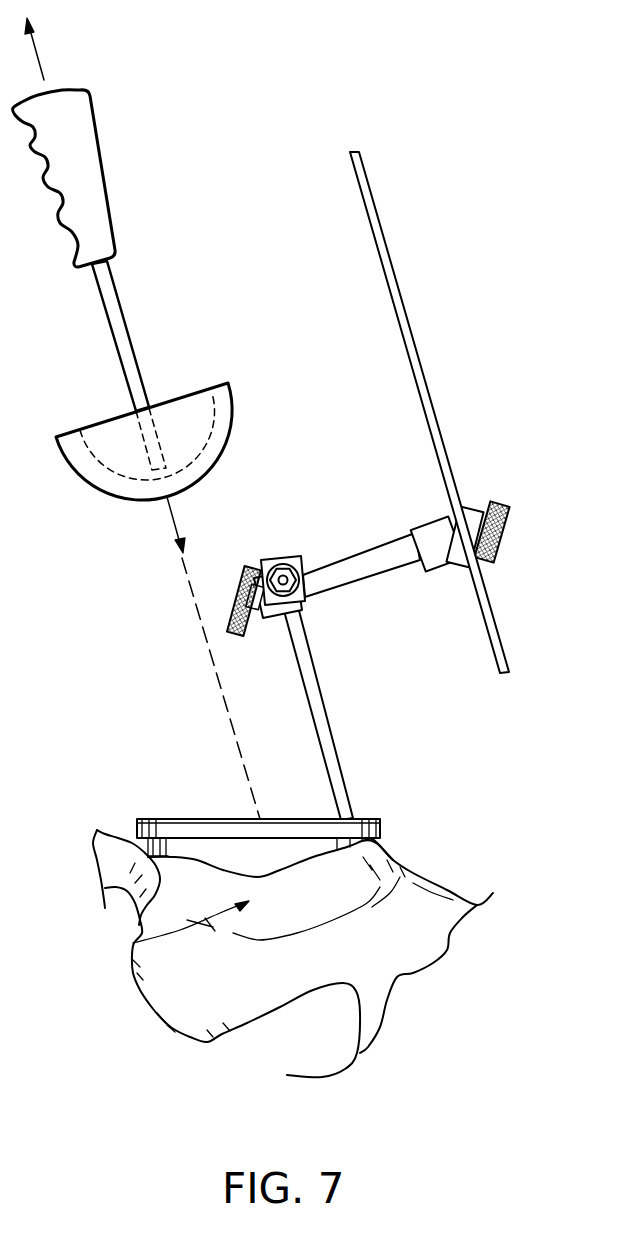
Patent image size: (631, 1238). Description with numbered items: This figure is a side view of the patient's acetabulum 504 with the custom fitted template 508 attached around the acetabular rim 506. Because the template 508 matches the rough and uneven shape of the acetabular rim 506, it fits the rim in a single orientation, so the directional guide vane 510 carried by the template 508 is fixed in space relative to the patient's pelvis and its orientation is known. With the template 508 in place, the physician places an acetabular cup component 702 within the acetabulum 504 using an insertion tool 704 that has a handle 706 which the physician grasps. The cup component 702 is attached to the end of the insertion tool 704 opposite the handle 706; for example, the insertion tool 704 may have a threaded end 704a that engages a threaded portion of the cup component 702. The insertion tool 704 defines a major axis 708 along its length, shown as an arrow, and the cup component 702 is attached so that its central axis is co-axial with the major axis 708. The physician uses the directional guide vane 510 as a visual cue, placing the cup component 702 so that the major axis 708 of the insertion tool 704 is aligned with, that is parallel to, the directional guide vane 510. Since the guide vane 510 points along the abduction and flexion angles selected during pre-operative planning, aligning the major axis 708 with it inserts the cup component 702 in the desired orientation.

The acetabulum 504 is at (133, 943).
The acetabular rim 506 is at (377, 848).
The custom fitted template 508 is at (167, 820).
The directional guide vane 510 is at (438, 422).
The acetabular cup component 702 is at (202, 477).
The insertion tool 704 is at (131, 318).
The threaded end 704a is at (162, 452).
The handle 706 is at (100, 163).
The major axis 708 is at (168, 517).